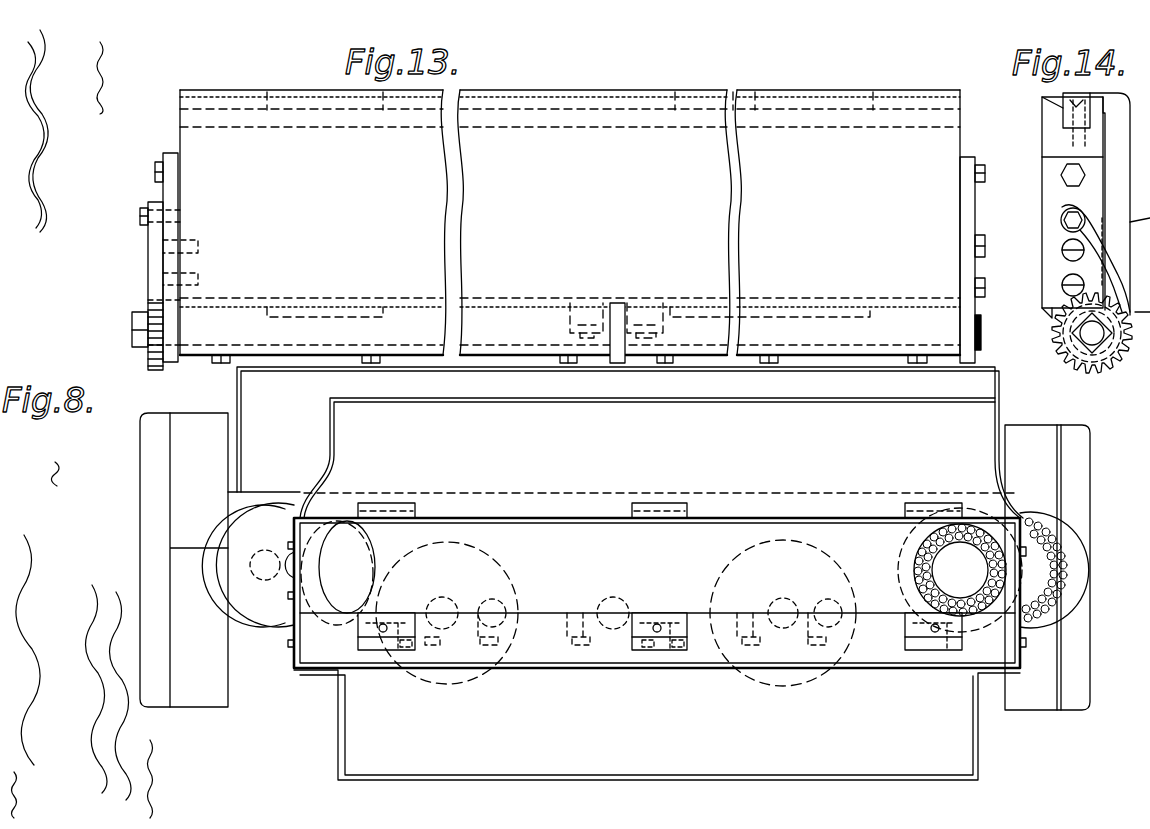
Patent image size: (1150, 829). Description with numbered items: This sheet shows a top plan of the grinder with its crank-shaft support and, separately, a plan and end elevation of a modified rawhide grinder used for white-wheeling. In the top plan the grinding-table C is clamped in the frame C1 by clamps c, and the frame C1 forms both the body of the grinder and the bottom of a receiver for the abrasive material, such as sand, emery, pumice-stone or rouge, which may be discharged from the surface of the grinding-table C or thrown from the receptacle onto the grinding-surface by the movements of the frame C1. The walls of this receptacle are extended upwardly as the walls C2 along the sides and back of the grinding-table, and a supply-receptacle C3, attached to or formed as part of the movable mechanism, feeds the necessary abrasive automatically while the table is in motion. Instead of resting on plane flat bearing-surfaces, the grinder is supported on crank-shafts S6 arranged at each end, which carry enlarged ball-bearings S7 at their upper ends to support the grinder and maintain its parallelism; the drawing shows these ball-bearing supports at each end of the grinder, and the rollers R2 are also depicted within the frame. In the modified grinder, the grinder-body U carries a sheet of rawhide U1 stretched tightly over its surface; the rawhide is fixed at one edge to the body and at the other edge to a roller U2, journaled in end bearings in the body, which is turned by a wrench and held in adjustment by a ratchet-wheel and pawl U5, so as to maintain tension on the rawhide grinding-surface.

In FIG. 13, the grinder-body U is at (810, 66).
In FIG. 14, the grinder-body U is at (1030, 178).
In FIG. 13, the sheet of rawhide U1 is at (630, 206).
In FIG. 13, the roller U2 is at (903, 320).
In FIG. 13, the ratchet flange U5 is at (150, 307).
In FIG. 8, the grinding-table C is at (657, 593).
In FIG. 8, the frame C1 is at (338, 587).
In FIG. 8, the upwardly extended walls of the receptacle C2 is at (657, 458).
In FIG. 8, the supply-receptacle C3 is at (625, 442).
In FIG. 8, the roller R2 is at (457, 600).
In FIG. 8, the crank-shafts S6 is at (1110, 547).
In FIG. 8, the ball-bearing S7 is at (917, 557).
In FIG. 8, the clamps c is at (372, 652).